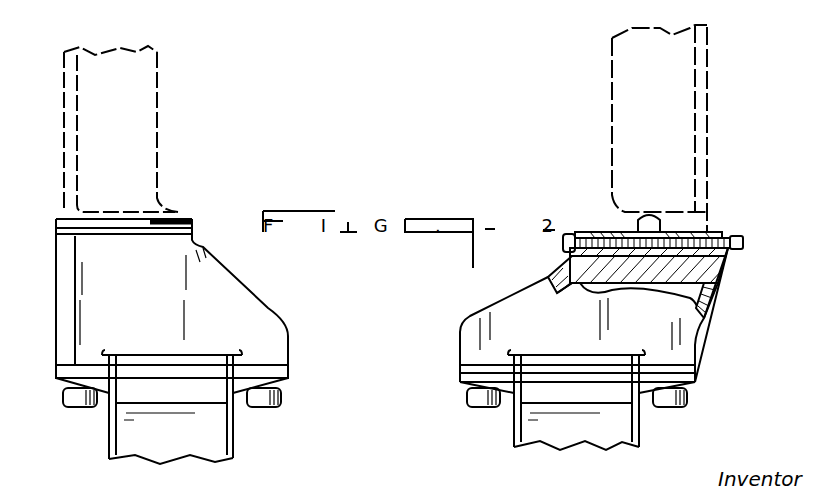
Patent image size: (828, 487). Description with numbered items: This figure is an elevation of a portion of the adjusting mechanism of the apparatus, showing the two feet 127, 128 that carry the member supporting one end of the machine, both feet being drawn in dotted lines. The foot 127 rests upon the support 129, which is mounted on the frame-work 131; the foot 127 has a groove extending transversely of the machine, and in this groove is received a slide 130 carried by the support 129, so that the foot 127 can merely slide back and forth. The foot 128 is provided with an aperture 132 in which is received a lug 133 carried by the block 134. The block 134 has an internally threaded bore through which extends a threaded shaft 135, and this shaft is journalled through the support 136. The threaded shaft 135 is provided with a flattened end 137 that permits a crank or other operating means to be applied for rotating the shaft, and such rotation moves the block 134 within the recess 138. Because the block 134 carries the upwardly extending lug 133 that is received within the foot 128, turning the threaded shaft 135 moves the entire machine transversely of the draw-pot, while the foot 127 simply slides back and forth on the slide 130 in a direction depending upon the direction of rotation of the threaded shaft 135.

The foot 127 is at (107, 98).
The foot 128 is at (670, 93).
The support 129 is at (200, 290).
The slide 130 is at (193, 222).
The frame-work 131 is at (145, 432).
The aperture 132 is at (650, 214).
The lug 133 is at (660, 228).
The block 134 is at (690, 232).
The threaded shaft 135 is at (605, 240).
The support 136 is at (725, 300).
The flattened end 137 is at (748, 248).
The recess 138 is at (583, 284).